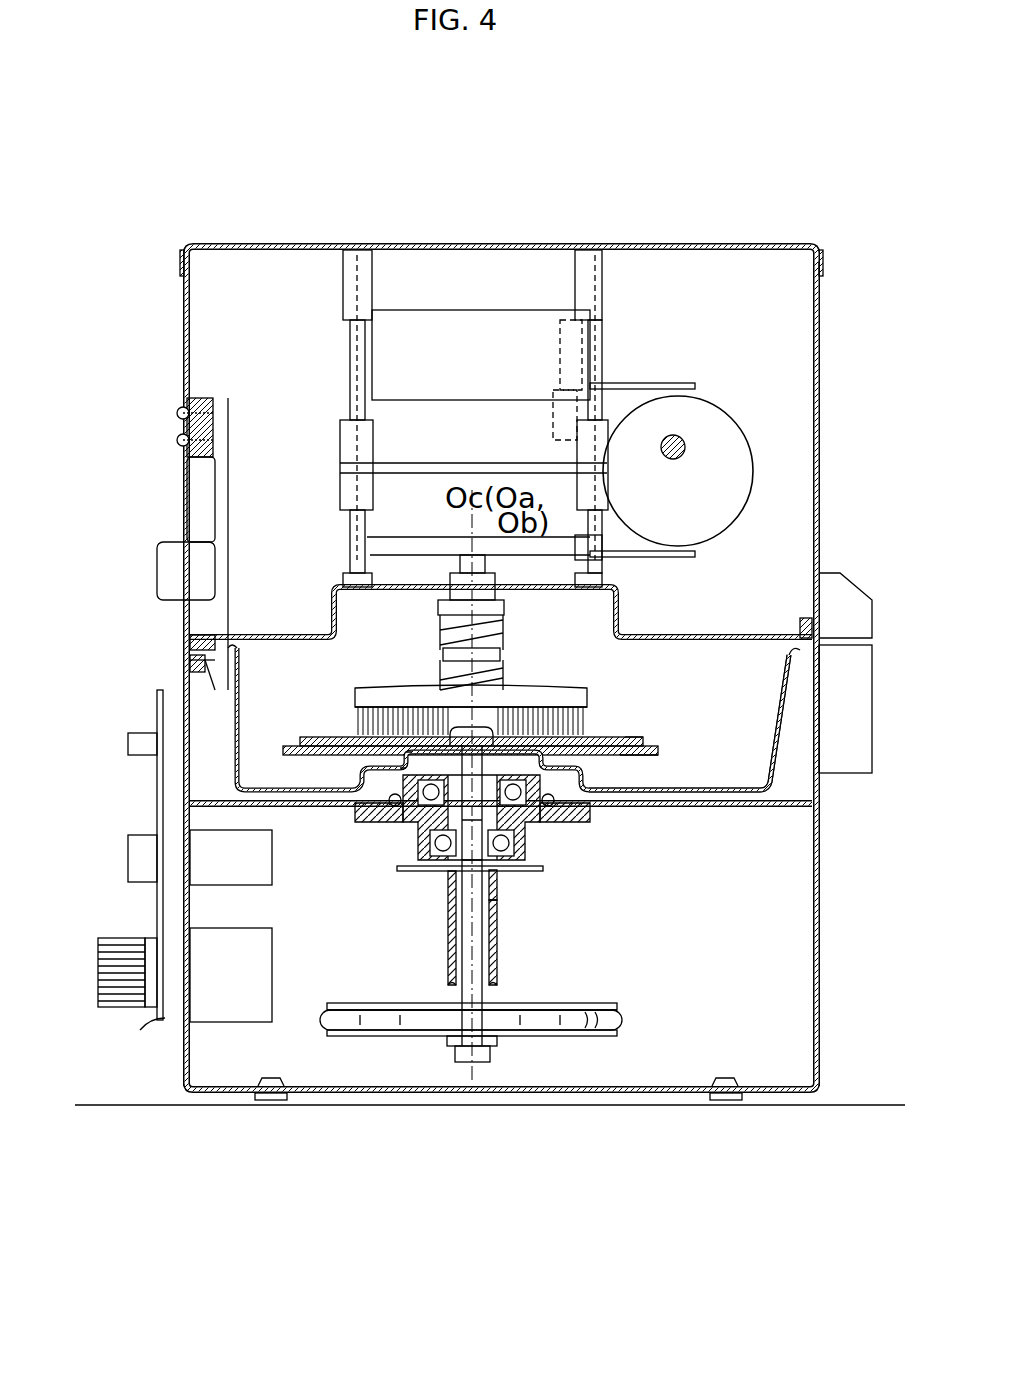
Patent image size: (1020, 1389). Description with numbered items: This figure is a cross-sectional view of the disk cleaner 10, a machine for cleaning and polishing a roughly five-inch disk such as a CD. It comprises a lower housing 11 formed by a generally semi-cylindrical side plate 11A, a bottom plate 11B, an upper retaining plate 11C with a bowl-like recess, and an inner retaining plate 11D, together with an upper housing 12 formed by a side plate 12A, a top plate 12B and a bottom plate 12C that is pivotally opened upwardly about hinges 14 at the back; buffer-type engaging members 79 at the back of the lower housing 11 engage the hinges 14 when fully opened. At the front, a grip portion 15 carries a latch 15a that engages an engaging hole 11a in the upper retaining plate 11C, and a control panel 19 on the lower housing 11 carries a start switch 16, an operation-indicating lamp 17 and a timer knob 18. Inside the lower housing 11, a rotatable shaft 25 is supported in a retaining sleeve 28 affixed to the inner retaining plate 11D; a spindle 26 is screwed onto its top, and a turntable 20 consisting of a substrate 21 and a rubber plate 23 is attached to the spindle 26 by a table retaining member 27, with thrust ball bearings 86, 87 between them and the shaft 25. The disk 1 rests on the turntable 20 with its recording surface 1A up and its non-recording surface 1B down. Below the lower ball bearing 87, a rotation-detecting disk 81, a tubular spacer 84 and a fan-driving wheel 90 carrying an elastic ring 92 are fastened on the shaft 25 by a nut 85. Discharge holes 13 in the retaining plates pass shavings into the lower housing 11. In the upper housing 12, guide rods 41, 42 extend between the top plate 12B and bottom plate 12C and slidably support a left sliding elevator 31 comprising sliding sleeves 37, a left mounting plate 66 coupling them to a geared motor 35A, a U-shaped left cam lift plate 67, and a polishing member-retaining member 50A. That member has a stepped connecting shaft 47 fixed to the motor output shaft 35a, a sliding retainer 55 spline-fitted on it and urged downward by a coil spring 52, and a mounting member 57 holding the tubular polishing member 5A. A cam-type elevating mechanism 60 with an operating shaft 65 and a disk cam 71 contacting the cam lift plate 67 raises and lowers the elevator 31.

The disk 1 is at (600, 733).
The recording surface 1A is at (628, 745).
The non-recording surface 1B is at (650, 738).
The polishing member 5A is at (360, 718).
The disk cleaner 10 is at (483, 183).
The lower housing 11 is at (820, 942).
The side plate 11A is at (818, 1040).
The bottom plate 11B is at (490, 1098).
The upper retaining plate 11C is at (775, 778).
The inner retaining plate 11D is at (740, 806).
The engaging hole 11a is at (190, 655).
The upper housing 12 is at (820, 400).
The side plate 12A is at (183, 350).
The top plate 12B is at (290, 243).
The bottom plate 12C is at (738, 635).
The discharge holes 13 is at (375, 830).
The hinges 14 is at (832, 575).
The grip portion 15 is at (160, 565).
The latch 15a is at (195, 660).
The start switch 16 is at (140, 745).
The operation-indicating lamp 17 is at (140, 858).
The timer knob 18 is at (100, 960).
The control panel 19 is at (160, 1020).
The turntable 20 is at (696, 850).
The substrate 21 is at (628, 748).
The rubber plate 23 is at (640, 745).
The rotatable shaft 25 is at (462, 948).
The spindle 26 is at (405, 760).
The table retaining member 27 is at (520, 858).
The retaining sleeve 28 is at (420, 830).
The left sliding elevator 31 is at (340, 420).
The geared motor 35A is at (395, 347).
The output shaft 35a is at (500, 590).
The sliding sleeves 37 is at (345, 455).
The guide rod 41 is at (600, 335).
The guide rod 42 is at (350, 370).
The stepped connecting shaft 47 is at (445, 635).
The polishing member-retaining member 50A is at (397, 667).
The coil spring 52 is at (500, 655).
The sliding retainer 55 is at (545, 681).
The mounting member 57 is at (357, 692).
The cam-type elevating mechanism 60 is at (735, 410).
The operating shaft 65 is at (685, 447).
The left mounting plate 66 is at (370, 520).
The left cam lift plate 67 is at (655, 385).
The disk cam 71 is at (715, 517).
The buffer-type engaging members 79 is at (855, 730).
The rotation-detecting disk 81 is at (410, 871).
The tubular spacer 84 is at (450, 930).
The nut 85 is at (448, 1048).
The ball bearing 86 is at (543, 840).
The ball bearing 87 is at (500, 882).
The fan-driving wheel 90 is at (550, 1003).
The elastic ring 92 is at (365, 1010).